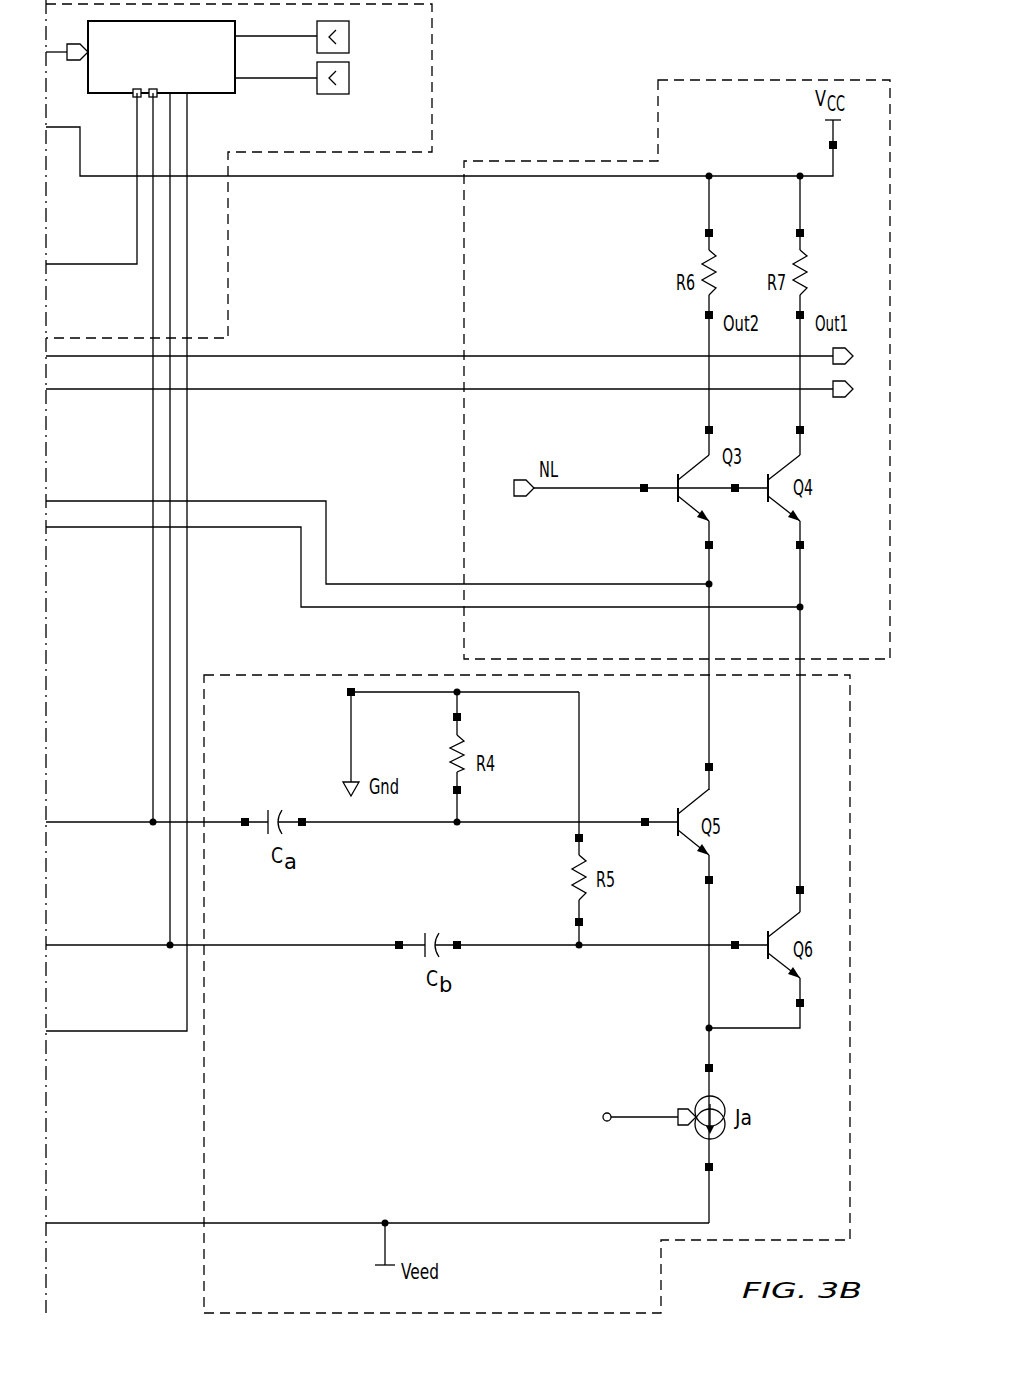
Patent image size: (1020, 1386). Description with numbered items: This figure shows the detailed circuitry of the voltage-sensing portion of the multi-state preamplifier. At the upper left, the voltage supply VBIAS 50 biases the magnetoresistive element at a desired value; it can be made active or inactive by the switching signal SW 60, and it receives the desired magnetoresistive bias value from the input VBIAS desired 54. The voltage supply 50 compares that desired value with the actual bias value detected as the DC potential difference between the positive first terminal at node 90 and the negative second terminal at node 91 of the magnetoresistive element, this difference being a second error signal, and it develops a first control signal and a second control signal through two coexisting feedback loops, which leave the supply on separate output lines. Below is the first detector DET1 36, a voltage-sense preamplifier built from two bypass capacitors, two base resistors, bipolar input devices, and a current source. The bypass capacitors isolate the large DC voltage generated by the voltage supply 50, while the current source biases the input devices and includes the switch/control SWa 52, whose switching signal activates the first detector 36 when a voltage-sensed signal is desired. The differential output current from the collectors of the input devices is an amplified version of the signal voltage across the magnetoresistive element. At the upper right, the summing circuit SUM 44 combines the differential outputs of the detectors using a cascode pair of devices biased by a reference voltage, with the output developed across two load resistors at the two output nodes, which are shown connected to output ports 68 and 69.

The voltage supply VBIAS1 50 is at (122, 83).
The switching signal SW1 60 is at (316, 44).
The input VBIAS desired 54 is at (316, 87).
The summing circuit SUM 44 is at (822, 80).
The output Out2 line 68 is at (854, 353).
The output Out1 line 69 is at (853, 394).
The node of positive first terminal 90 is at (152, 828).
The node of negative second terminal 91 is at (169, 950).
The first detector DET1 36 is at (204, 1132).
The switch/control SWa 52 is at (608, 1125).